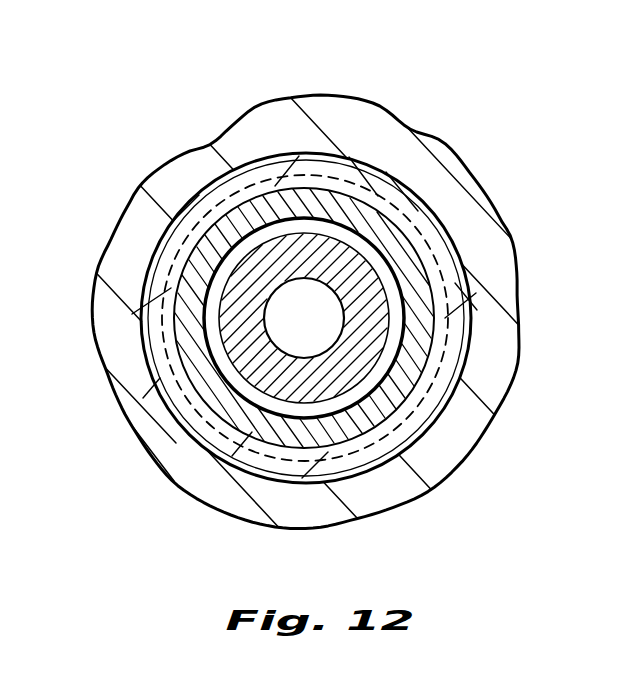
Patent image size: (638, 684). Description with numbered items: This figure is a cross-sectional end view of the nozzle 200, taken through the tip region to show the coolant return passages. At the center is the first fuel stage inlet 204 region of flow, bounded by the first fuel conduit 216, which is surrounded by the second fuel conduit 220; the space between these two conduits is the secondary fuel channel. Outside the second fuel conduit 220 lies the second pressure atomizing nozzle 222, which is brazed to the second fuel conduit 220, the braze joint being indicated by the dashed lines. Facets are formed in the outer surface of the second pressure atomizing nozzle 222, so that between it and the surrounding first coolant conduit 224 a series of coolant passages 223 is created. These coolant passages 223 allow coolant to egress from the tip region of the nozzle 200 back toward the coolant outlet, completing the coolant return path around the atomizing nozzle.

The nozzle 200 is at (107, 64).
The first fuel stage inlet 204 is at (292, 325).
The first fuel conduit 216 is at (367, 307).
The second fuel conduit 220 is at (170, 304).
The second pressure atomizing nozzle 222 is at (236, 183).
The coolant passages 223 is at (303, 150).
The first coolant conduit 224 is at (133, 204).